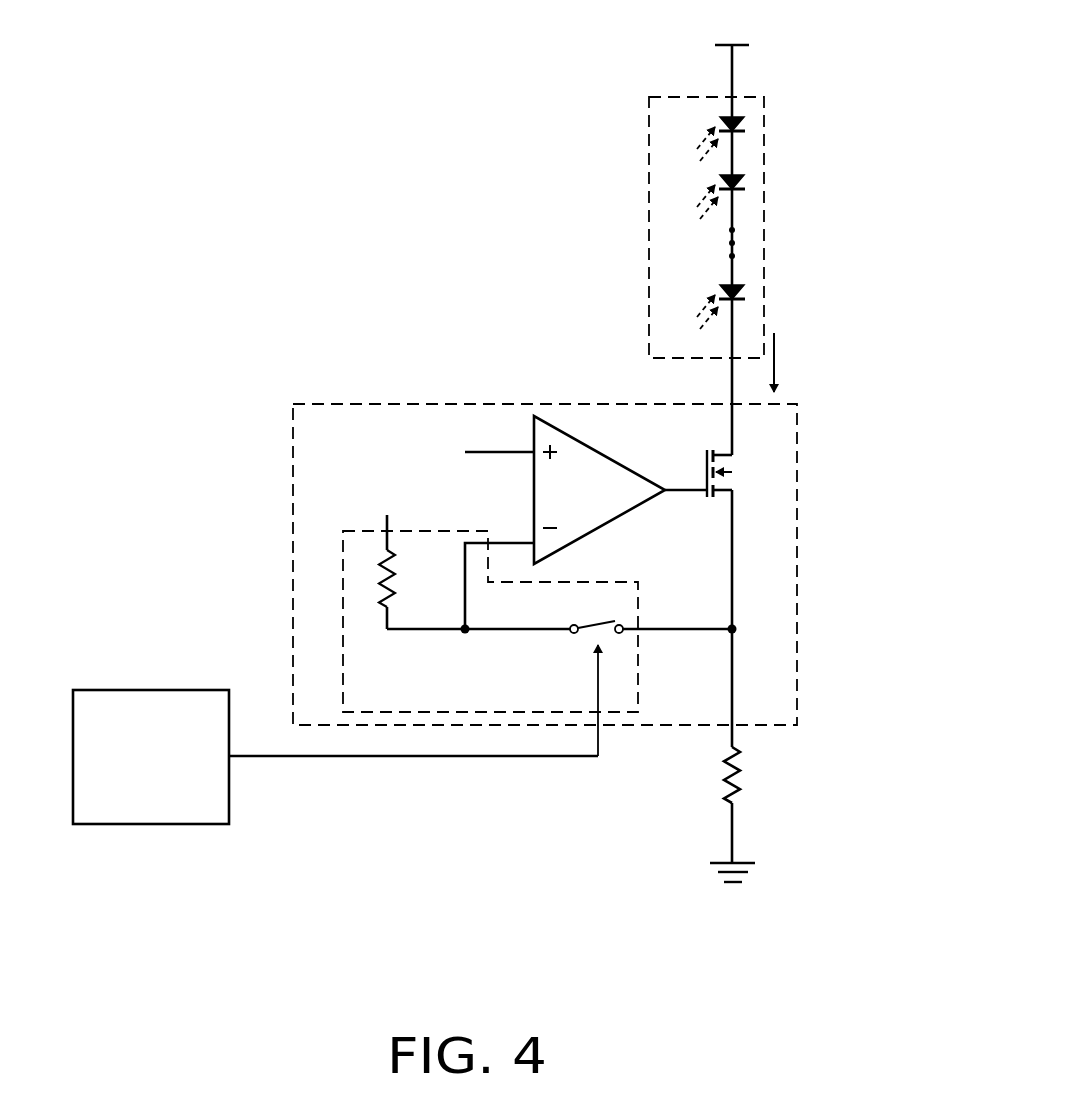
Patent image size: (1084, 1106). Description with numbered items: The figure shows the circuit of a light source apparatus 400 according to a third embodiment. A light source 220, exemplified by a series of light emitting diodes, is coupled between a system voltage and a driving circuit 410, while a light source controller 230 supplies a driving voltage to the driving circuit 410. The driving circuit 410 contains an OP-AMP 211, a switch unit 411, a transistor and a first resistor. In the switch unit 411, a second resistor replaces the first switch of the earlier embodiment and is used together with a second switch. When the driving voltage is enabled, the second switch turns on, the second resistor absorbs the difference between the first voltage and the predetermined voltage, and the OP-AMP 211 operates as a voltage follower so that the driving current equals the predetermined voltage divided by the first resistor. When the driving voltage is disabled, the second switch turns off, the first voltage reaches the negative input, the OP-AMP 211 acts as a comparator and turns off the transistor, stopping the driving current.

The light source apparatus 400 is at (877, 933).
The light source 220 is at (764, 250).
The driving circuit 410 is at (797, 515).
The OP-AMP 211 is at (611, 457).
The switch unit 411 is at (629, 727).
The light source controller 230 is at (170, 824).